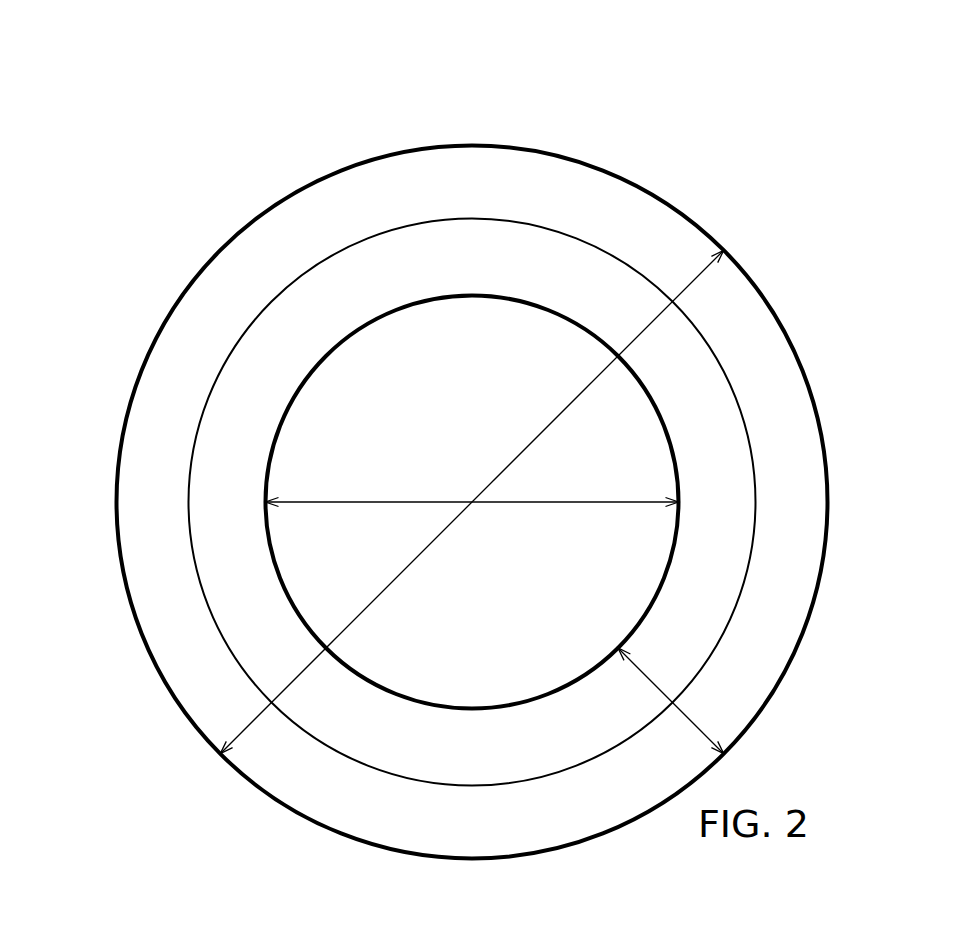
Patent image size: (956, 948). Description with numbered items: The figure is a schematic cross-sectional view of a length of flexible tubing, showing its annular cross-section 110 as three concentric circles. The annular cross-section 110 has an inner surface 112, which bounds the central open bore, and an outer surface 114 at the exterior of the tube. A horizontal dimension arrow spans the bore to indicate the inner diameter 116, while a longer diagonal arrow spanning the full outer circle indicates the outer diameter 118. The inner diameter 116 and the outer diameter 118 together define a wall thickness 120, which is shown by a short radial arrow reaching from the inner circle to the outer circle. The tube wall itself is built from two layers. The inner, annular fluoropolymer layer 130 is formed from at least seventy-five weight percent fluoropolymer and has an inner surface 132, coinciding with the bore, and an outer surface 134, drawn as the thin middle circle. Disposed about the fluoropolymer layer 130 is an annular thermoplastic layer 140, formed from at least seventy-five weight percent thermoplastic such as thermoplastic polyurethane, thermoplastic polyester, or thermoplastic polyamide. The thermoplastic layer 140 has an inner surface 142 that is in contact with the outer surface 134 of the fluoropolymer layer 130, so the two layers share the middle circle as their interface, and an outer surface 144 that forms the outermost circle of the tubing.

The annular cross-section 110 is at (182, 207).
The inner surface 112 is at (418, 305).
The outer surface 114 is at (590, 165).
The inner diameter 116 is at (472, 487).
The outer diameter 118 is at (471, 501).
The wall thickness 120 is at (679, 701).
The annular fluoropolymer layer 130 is at (492, 264).
The inner surface of fluoropolymer layer 132 is at (325, 360).
The outer surface of fluoropolymer layer 134 is at (370, 237).
The annular thermoplastic layer 140 is at (492, 190).
The inner surface of thermoplastic layer 142 is at (303, 273).
The outer surface of thermoplastic layer 144 is at (428, 147).